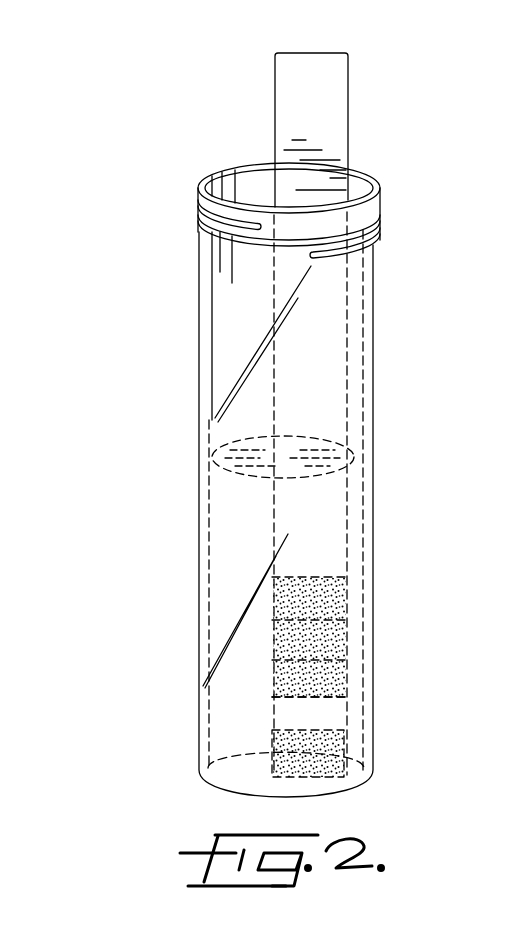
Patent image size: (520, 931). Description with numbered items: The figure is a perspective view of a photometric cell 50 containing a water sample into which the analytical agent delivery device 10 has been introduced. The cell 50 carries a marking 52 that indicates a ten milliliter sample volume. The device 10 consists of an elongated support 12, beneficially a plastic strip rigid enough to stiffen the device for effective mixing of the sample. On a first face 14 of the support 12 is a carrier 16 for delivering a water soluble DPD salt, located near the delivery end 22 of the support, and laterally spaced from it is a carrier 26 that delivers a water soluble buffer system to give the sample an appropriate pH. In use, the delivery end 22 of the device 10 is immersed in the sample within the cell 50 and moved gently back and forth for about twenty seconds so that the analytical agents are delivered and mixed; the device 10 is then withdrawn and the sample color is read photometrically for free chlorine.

The analytical agent delivery device 10 is at (260, 78).
The support 12 is at (348, 128).
The first face 14 is at (303, 184).
The photometric cell 50 is at (199, 340).
The marking 52 is at (278, 480).
The buffer system carrier 26 is at (320, 607).
The delivery end 22 is at (318, 712).
The DPD carrier 16 is at (279, 751).